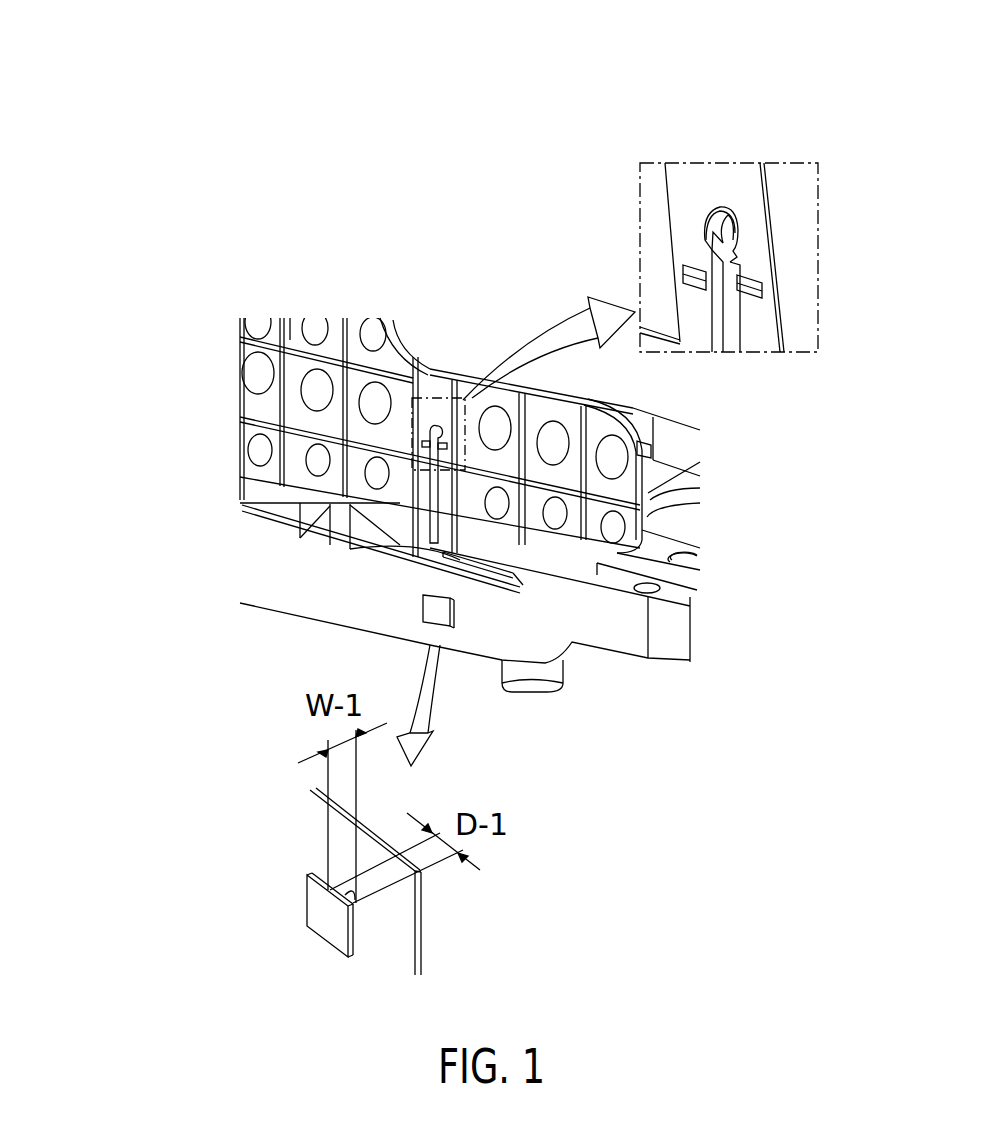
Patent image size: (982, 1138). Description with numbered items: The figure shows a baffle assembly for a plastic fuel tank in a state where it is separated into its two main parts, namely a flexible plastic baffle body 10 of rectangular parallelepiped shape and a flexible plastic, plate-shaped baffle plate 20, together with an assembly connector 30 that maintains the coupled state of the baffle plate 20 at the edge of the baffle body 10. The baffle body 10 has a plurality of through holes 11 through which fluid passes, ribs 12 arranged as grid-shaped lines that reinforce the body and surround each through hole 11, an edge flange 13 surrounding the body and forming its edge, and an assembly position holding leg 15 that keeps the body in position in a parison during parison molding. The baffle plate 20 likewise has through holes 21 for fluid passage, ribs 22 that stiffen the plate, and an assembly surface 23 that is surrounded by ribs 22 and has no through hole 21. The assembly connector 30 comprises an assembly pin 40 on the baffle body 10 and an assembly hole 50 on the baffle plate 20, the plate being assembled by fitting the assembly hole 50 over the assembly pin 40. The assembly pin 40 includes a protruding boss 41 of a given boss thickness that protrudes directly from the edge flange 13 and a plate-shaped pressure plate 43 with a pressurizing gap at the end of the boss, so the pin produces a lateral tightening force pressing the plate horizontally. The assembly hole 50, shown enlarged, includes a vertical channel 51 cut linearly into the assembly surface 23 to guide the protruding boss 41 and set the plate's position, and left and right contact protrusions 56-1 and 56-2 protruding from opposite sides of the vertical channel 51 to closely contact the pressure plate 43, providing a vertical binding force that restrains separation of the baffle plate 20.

The baffle body 10 is at (718, 481).
The through hole 11 is at (682, 560).
The rib 12 is at (675, 533).
The edge flange 13 is at (670, 444).
The assembly position holding leg 15 is at (548, 676).
The baffle plate 20 is at (351, 298).
The through hole 21 is at (307, 453).
The rib 22 is at (297, 333).
The assembly surface 23 is at (463, 398).
The assembly connector 30 is at (103, 578).
The assembly pin 40 is at (425, 613).
The protruding boss 41 is at (336, 890).
The pressure plate 43 is at (325, 921).
The assembly hole 50 is at (432, 428).
The vertical channel 51 is at (725, 223).
The left contact protrusion 56-1 is at (695, 267).
The right contact protrusion 56-2 is at (750, 280).